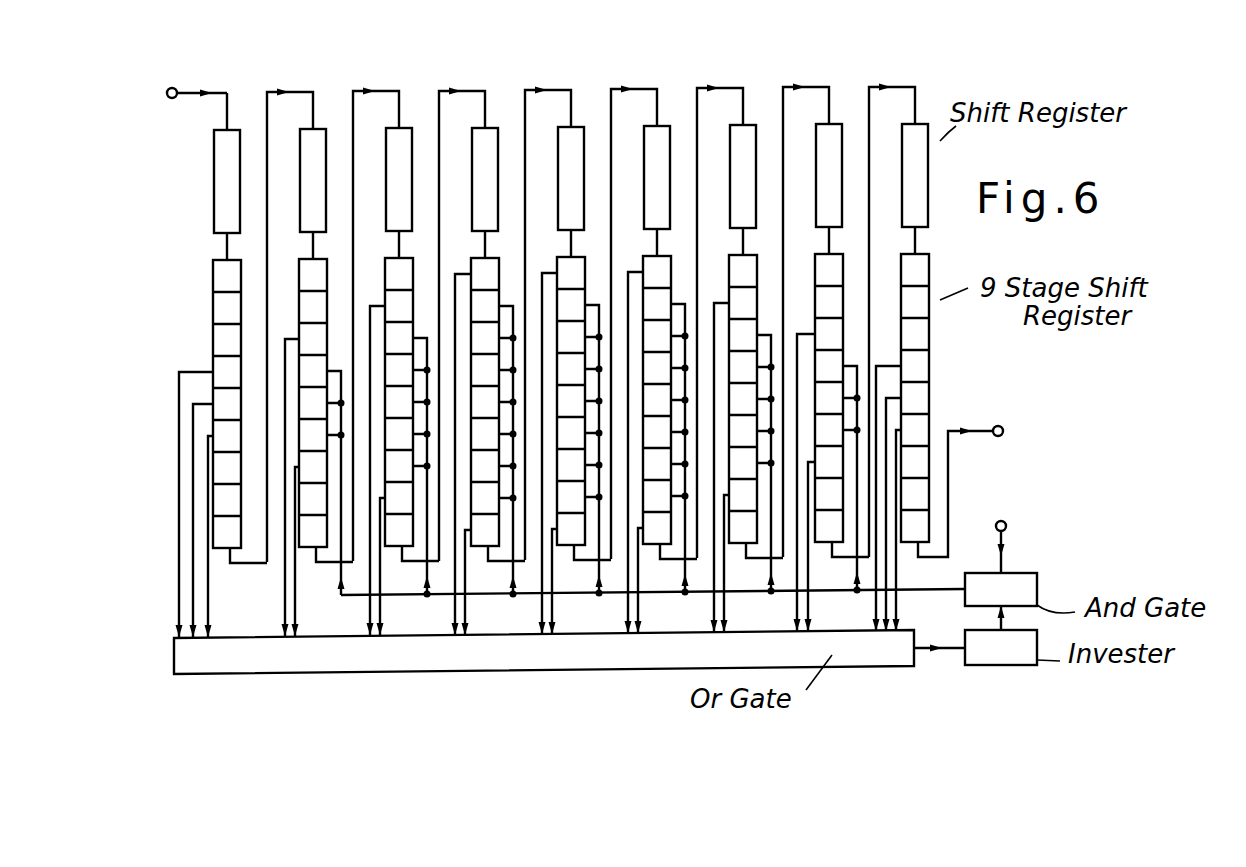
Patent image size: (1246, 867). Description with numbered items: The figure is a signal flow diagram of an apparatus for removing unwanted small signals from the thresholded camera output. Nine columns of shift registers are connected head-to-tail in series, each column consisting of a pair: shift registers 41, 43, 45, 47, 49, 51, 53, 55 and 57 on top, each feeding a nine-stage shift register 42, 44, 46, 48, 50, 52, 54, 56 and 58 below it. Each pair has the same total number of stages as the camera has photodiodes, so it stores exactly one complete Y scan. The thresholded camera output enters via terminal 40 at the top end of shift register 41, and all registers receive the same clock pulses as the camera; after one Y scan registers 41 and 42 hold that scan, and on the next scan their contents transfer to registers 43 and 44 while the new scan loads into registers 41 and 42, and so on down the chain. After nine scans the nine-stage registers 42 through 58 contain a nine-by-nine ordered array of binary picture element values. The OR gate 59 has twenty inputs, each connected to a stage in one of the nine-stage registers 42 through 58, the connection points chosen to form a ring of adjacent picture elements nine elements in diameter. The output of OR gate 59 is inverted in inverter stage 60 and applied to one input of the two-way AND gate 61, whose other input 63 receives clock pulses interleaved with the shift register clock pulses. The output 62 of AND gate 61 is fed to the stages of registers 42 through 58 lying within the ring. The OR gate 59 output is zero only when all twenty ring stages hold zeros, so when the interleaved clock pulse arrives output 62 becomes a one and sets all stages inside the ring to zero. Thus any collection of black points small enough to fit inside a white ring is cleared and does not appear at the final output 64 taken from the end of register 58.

The terminal 40 is at (173, 88).
The shift register 41 is at (222, 183).
The nine-stage shift register 42 is at (212, 297).
The shift register 43 is at (316, 150).
The nine-stage shift register 44 is at (298, 300).
The shift register 45 is at (402, 150).
The nine-stage shift register 46 is at (390, 284).
The shift register 47 is at (488, 150).
The nine-stage shift register 48 is at (475, 284).
The shift register 49 is at (574, 150).
The nine-stage shift register 50 is at (562, 285).
The shift register 51 is at (660, 150).
The nine-stage shift register 52 is at (648, 286).
The shift register 53 is at (746, 150).
The nine-stage shift register 54 is at (735, 287).
The shift register 55 is at (832, 150).
The nine-stage shift register 56 is at (821, 288).
The shift register 57 is at (918, 150).
The nine-stage shift register 58 is at (906, 288).
The OR gate 59 is at (247, 655).
The inverter stage 60 is at (977, 652).
The AND gate 61 is at (1030, 597).
The output of AND gate 62 is at (867, 594).
The input of AND gate 63 is at (1005, 520).
The final output 64 is at (979, 429).